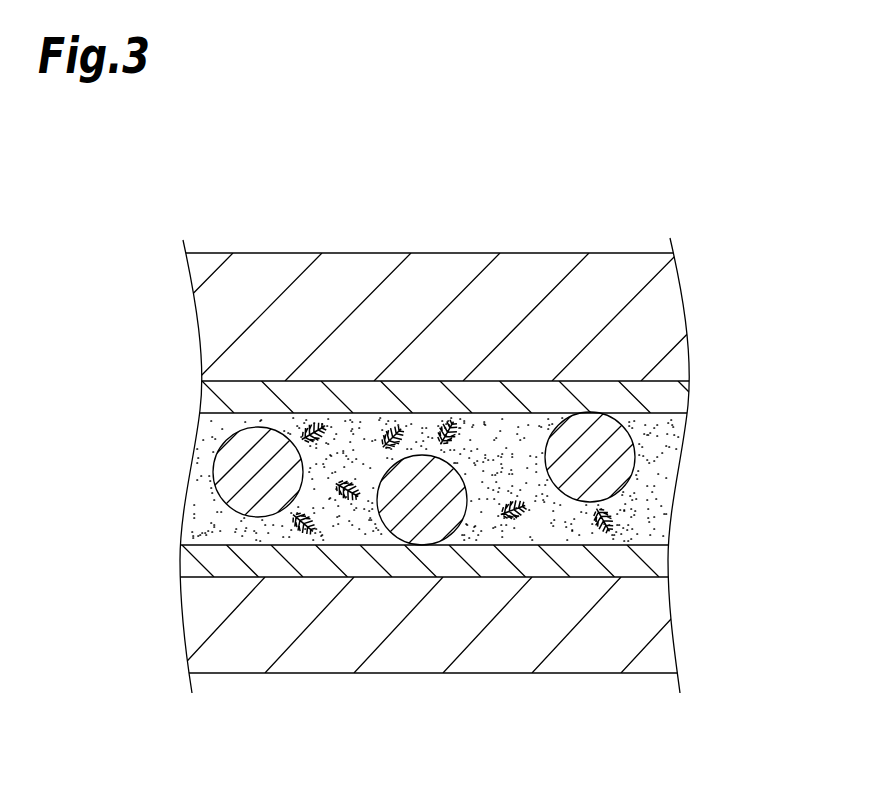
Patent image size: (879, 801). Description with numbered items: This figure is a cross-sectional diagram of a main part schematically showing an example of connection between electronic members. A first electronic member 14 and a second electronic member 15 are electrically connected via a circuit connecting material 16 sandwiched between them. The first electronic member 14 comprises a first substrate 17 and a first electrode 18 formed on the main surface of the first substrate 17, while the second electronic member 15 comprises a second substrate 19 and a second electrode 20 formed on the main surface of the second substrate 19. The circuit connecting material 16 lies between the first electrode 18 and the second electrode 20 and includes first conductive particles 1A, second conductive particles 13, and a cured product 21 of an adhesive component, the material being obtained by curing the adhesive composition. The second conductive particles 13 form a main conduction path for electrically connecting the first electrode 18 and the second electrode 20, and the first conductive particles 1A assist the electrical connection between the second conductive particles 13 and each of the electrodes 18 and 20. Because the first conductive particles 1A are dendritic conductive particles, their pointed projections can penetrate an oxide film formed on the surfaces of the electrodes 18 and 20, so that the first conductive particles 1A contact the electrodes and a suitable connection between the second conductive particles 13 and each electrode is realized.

The first conductive particles 1A is at (447, 433).
The second conductive particles 13 is at (233, 472).
The first electronic member 14 is at (457, 334).
The second electronic member 15 is at (488, 609).
The circuit connecting material 16 is at (463, 456).
The first substrate 17 is at (653, 310).
The first electrode 18 is at (461, 398).
The second substrate 19 is at (484, 625).
The second electrode 20 is at (642, 563).
The cured product 21 is at (660, 435).